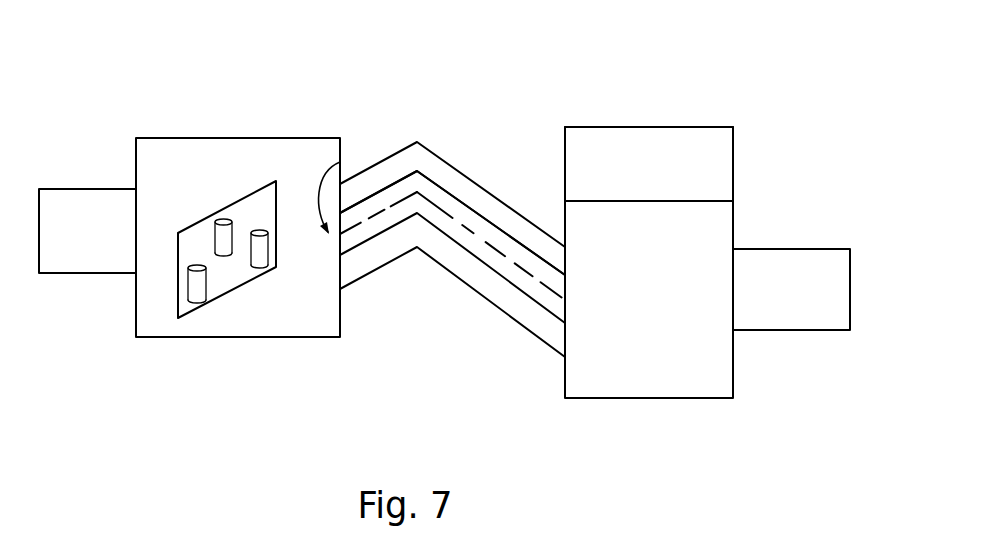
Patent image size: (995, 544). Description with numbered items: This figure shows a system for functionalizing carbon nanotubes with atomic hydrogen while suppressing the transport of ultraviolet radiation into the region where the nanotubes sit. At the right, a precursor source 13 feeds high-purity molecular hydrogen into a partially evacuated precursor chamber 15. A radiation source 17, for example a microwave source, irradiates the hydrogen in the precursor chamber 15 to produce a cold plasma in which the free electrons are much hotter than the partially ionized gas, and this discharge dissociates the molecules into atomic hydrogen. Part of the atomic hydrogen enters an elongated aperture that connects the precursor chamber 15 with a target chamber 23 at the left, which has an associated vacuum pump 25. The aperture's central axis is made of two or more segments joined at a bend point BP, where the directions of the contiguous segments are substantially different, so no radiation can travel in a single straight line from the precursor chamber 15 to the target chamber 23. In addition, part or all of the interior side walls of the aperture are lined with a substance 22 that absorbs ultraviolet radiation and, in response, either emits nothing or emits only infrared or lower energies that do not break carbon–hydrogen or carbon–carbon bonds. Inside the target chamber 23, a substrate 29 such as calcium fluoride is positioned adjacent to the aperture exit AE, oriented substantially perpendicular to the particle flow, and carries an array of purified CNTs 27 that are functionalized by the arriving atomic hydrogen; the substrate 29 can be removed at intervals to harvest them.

The precursor source 13 is at (800, 249).
The precursor chamber 15 is at (733, 220).
The radiation source 17 is at (650, 128).
The uv-absorbing substance 22 is at (525, 295).
The target chamber 23 is at (242, 138).
The vacuum pump 25 is at (82, 188).
The CNTs 27 is at (223, 253).
The substrate 29 is at (200, 223).
The aperture exit AE is at (340, 162).
The bend point BP is at (421, 157).